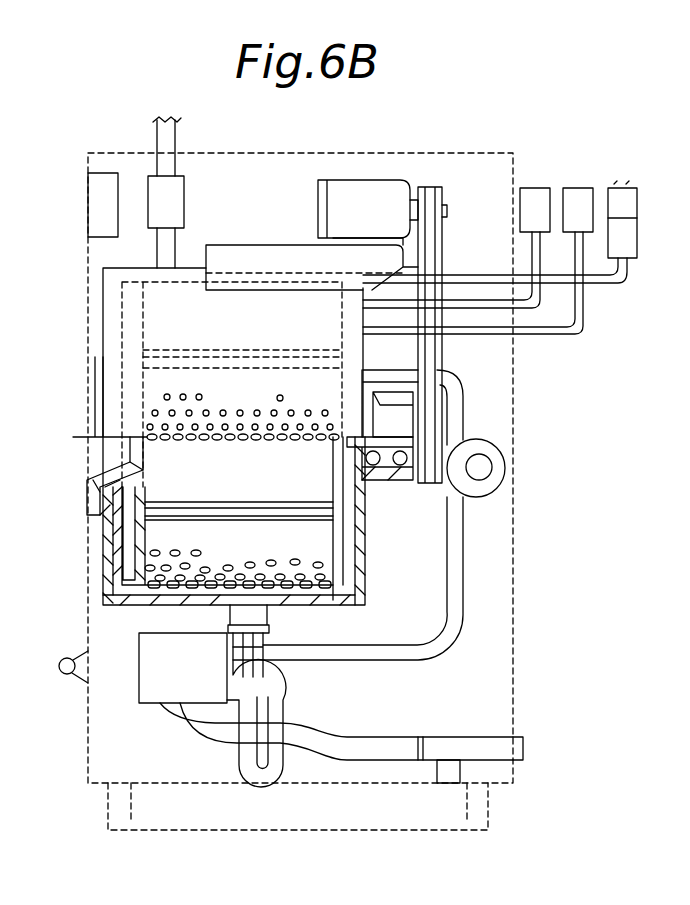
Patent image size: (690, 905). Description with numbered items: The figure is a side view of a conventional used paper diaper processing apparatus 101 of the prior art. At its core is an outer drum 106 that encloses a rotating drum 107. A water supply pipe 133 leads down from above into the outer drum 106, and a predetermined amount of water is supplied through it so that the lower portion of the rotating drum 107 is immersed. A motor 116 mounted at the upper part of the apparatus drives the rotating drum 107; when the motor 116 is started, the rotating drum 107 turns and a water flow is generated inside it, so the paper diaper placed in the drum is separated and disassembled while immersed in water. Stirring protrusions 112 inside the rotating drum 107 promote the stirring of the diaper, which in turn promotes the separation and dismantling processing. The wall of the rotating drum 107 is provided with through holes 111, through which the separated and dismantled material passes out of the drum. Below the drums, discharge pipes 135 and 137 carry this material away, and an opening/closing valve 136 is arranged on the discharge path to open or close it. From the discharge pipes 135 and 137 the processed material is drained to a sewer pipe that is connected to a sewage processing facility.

The used paper diaper processing apparatus 101 is at (548, 512).
The outer drum 106 is at (105, 294).
The rotating drum 107 is at (112, 336).
The through hole 111 is at (282, 400).
The stirring protrusion 112 is at (223, 350).
The motor 116 is at (362, 193).
The water supply pipe 133 is at (169, 135).
The discharge pipe 135 is at (285, 700).
The opening/closing valve 136 is at (147, 693).
The discharge pipe 137 is at (350, 739).